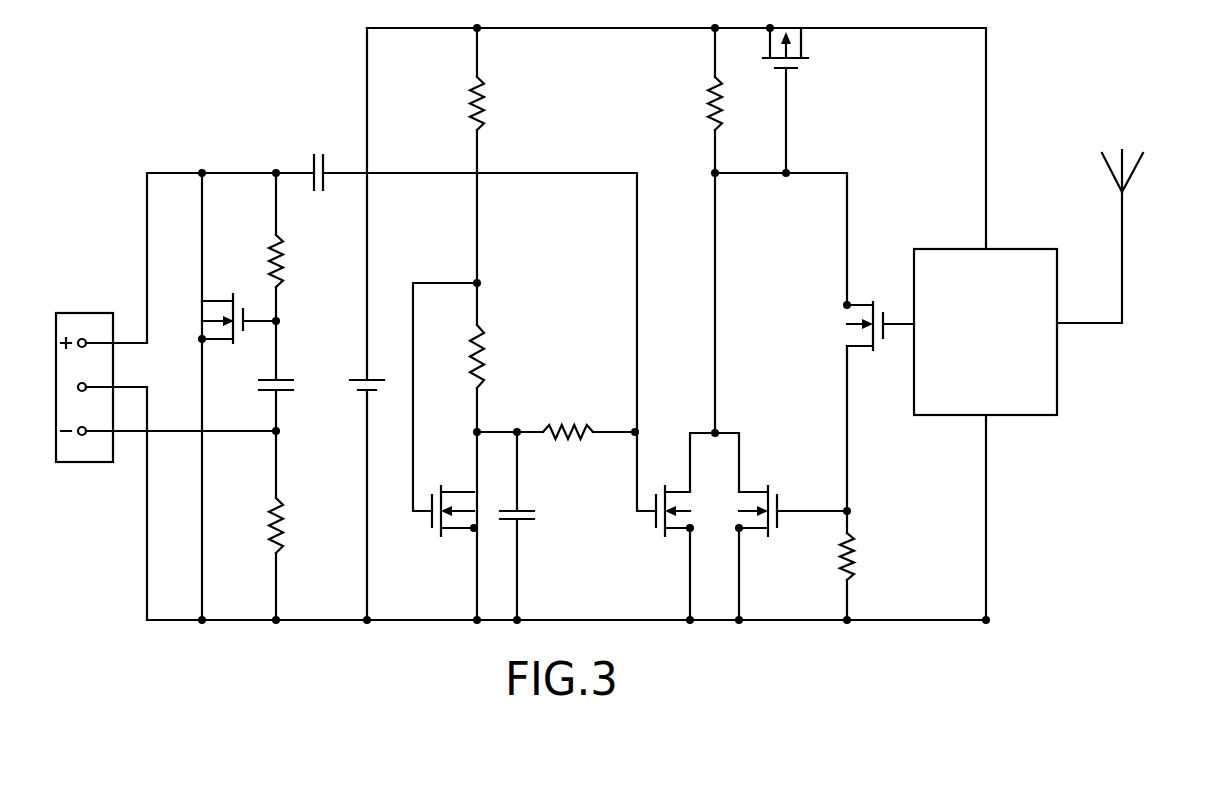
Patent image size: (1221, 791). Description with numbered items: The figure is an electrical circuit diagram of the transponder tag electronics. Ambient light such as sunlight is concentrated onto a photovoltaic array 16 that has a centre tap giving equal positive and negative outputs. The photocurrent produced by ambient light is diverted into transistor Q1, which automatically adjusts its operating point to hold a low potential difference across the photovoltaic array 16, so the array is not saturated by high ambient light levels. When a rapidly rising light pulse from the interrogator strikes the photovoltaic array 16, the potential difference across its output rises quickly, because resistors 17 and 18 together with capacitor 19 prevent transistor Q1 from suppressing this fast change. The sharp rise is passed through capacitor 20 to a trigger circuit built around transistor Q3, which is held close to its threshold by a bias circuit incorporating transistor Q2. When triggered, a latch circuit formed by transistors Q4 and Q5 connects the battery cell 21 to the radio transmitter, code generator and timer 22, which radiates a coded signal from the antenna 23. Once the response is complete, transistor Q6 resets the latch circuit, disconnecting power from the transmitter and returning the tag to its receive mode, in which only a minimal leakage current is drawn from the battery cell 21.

The photovoltaic array 16 is at (100, 455).
The resistor 17 is at (284, 266).
The resistor 18 is at (284, 534).
The capacitor 19 is at (293, 392).
The capacitor 20 is at (318, 152).
The battery cell 21 is at (348, 382).
The radio transmitter, code generator and timer 22 is at (1012, 415).
The antenna 23 is at (1122, 226).
The transistor Q1 is at (239, 336).
The transistor Q2 is at (444, 529).
The transistor Q3 is at (665, 531).
The transistor Q4 is at (766, 531).
The transistor Q5 is at (800, 63).
The transistor Q6 is at (880, 346).